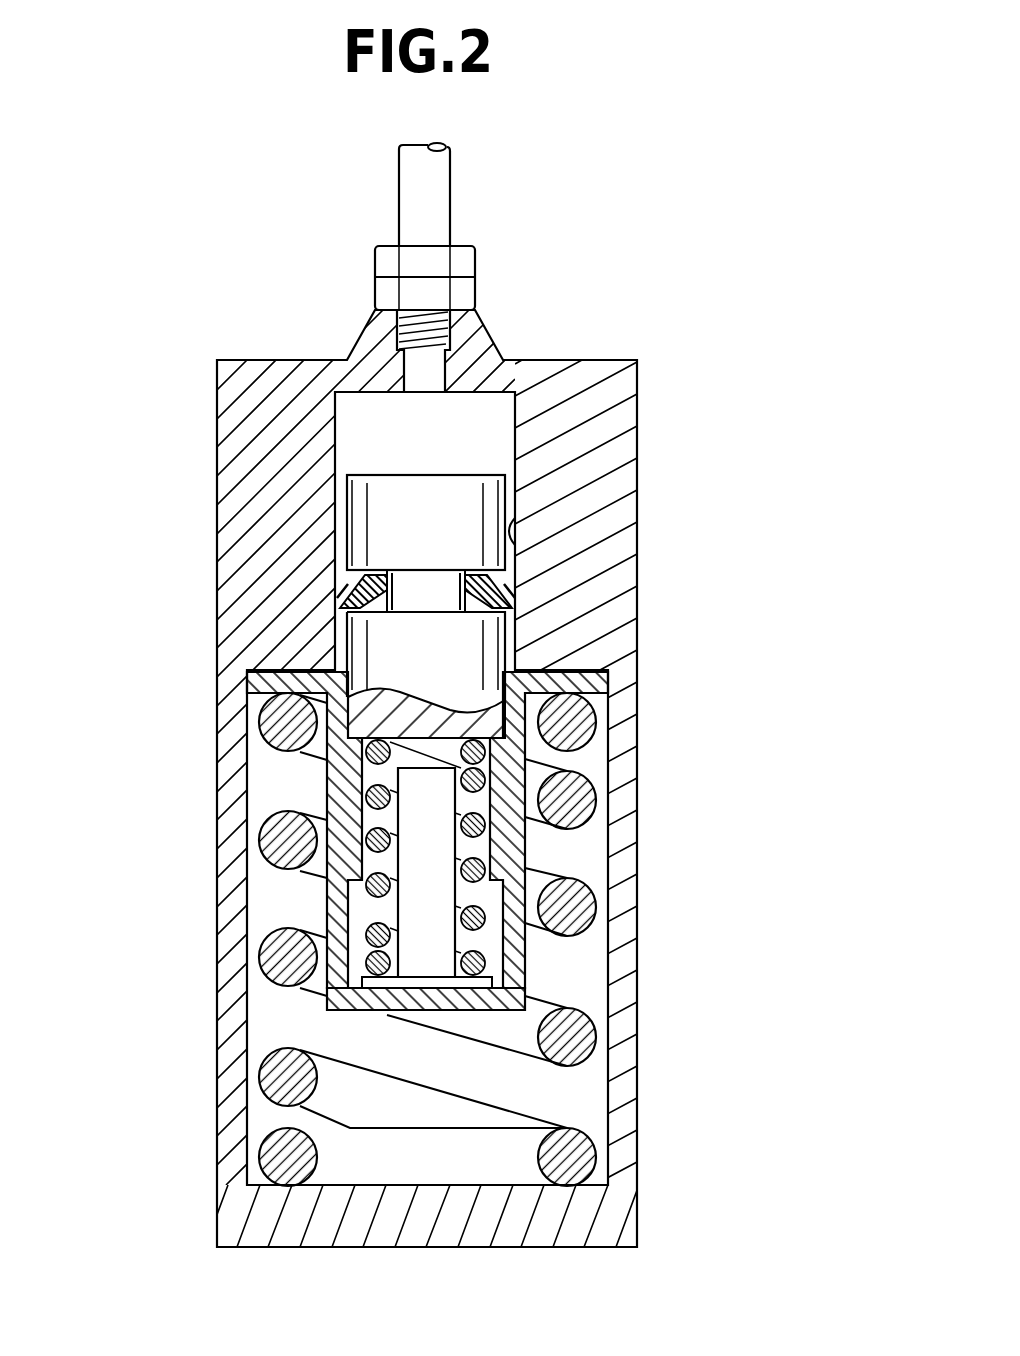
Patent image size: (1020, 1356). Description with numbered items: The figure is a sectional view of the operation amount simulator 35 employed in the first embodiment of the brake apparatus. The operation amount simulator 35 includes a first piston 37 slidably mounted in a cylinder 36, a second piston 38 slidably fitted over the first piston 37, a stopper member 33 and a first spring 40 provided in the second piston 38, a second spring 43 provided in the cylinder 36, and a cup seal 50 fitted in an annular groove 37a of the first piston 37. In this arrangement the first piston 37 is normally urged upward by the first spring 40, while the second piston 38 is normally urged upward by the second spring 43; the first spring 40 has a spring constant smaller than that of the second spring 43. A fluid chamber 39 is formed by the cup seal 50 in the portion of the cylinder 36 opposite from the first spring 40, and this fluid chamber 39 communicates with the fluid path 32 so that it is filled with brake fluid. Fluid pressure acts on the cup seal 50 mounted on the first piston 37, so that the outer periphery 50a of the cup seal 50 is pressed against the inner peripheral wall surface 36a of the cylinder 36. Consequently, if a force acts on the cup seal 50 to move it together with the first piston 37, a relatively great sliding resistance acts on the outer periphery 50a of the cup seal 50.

The fluid path 32 is at (408, 198).
The operation amount simulator 35 is at (648, 283).
The cylinder 36 is at (625, 470).
The inner peripheral wall surface 36a is at (513, 543).
The first piston 37 is at (470, 652).
The annular groove 37a is at (385, 585).
The second piston 38 is at (518, 867).
The fluid chamber 39 is at (448, 448).
The first spring 40 is at (375, 898).
The stopper member 33 is at (427, 950).
The second spring 43 is at (270, 1177).
The cup seal 50 is at (355, 617).
The outer periphery 50a is at (340, 597).